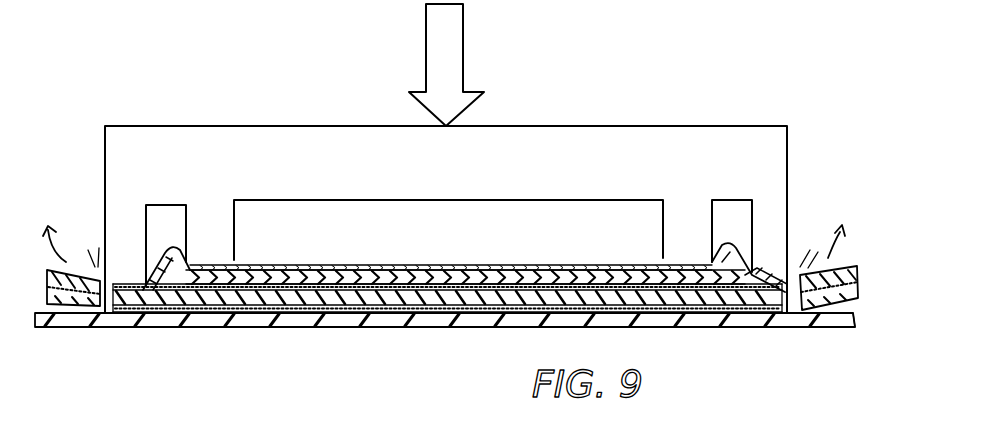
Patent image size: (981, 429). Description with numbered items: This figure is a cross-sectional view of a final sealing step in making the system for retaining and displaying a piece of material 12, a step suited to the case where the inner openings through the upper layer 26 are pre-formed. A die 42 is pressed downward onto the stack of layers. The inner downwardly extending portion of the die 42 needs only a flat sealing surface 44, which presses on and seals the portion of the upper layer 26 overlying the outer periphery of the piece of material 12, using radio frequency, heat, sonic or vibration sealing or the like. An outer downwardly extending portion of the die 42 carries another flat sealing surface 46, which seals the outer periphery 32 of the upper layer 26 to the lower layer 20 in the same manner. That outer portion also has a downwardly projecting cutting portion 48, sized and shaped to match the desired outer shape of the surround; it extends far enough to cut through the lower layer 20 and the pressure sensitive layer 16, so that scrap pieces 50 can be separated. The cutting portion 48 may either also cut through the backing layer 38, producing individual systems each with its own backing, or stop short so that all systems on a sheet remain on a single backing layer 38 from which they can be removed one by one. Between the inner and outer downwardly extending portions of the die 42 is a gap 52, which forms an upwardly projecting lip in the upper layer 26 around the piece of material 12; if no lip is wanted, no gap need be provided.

The piece of material 12 is at (415, 267).
The pressure sensitive layer 16 is at (487, 313).
The lower layer 20 is at (327, 310).
The upper layer 26 is at (662, 264).
The outer periphery 32 is at (153, 306).
The backing layer 38 is at (800, 328).
The die 42 is at (248, 150).
The flat sealing surface 44 is at (232, 265).
The flat sealing surface 46 is at (758, 278).
The cutting portion 48 is at (104, 308).
The scrap pieces 50 is at (853, 268).
The gap 52 is at (733, 208).